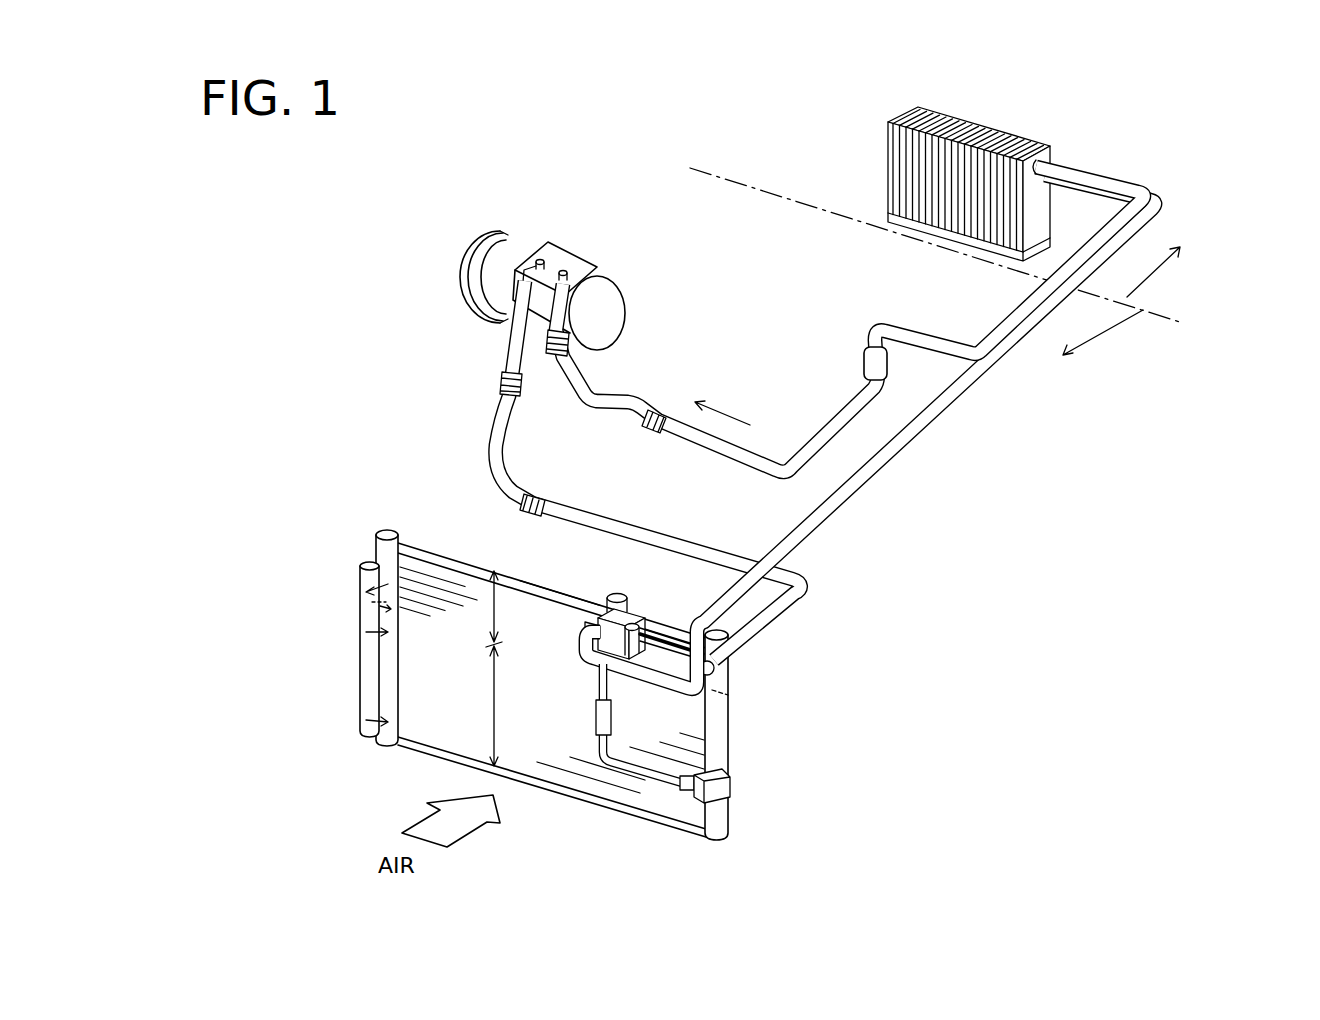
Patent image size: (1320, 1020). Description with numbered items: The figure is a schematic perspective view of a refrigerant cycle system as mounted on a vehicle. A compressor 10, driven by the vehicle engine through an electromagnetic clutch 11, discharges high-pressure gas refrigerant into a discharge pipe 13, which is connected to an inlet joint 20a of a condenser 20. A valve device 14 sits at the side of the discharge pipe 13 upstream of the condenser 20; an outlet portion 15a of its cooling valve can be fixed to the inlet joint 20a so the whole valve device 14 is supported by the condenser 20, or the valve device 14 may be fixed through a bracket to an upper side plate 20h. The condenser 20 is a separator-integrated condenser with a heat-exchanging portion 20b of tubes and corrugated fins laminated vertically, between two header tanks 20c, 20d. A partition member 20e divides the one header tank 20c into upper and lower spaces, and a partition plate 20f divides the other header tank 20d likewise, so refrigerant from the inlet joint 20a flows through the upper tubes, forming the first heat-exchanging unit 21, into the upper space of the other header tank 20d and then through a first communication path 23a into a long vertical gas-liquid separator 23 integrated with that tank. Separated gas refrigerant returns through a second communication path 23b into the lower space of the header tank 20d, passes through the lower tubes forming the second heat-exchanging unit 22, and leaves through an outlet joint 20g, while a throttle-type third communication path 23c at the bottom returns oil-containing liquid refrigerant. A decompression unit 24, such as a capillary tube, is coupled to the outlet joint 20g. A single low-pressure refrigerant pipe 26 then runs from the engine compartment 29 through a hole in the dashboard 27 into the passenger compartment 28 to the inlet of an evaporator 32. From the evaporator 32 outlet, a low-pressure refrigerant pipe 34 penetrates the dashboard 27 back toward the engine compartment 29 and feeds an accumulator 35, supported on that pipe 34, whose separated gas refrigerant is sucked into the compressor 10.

The compressor 10 is at (607, 300).
The electromagnetic clutch 11 is at (494, 233).
The discharge pipe 13 is at (500, 383).
The valve device 14 is at (578, 638).
The outlet portion 15a is at (667, 648).
The condenser 20 is at (494, 537).
The inlet joint 20a is at (728, 668).
The heat-exchanging portion 20b is at (435, 713).
The one header tank 20c is at (716, 730).
The other header tank 20d is at (385, 557).
The partition member 20e is at (712, 690).
The partition plate 20f is at (368, 602).
The outlet joint 20g is at (730, 790).
The upper side plate 20h is at (573, 595).
The first heat-exchanging unit 21 is at (514, 606).
The second heat-exchanging unit 22 is at (512, 704).
The gas-liquid separator 23 is at (360, 652).
The first communication path 23a is at (368, 583).
The second communication path 23b is at (368, 632).
The third communication path 23c is at (372, 733).
The decompression unit 24 is at (598, 720).
The low-pressure refrigerant pipe 26 is at (918, 432).
The dashboard 27 is at (1178, 312).
The passenger compartment 28 is at (1204, 239).
The engine compartment 29 is at (1079, 369).
The evaporator 32 is at (1003, 96).
The low-pressure refrigerant pipe 34 is at (1010, 308).
The accumulator 35 is at (864, 355).